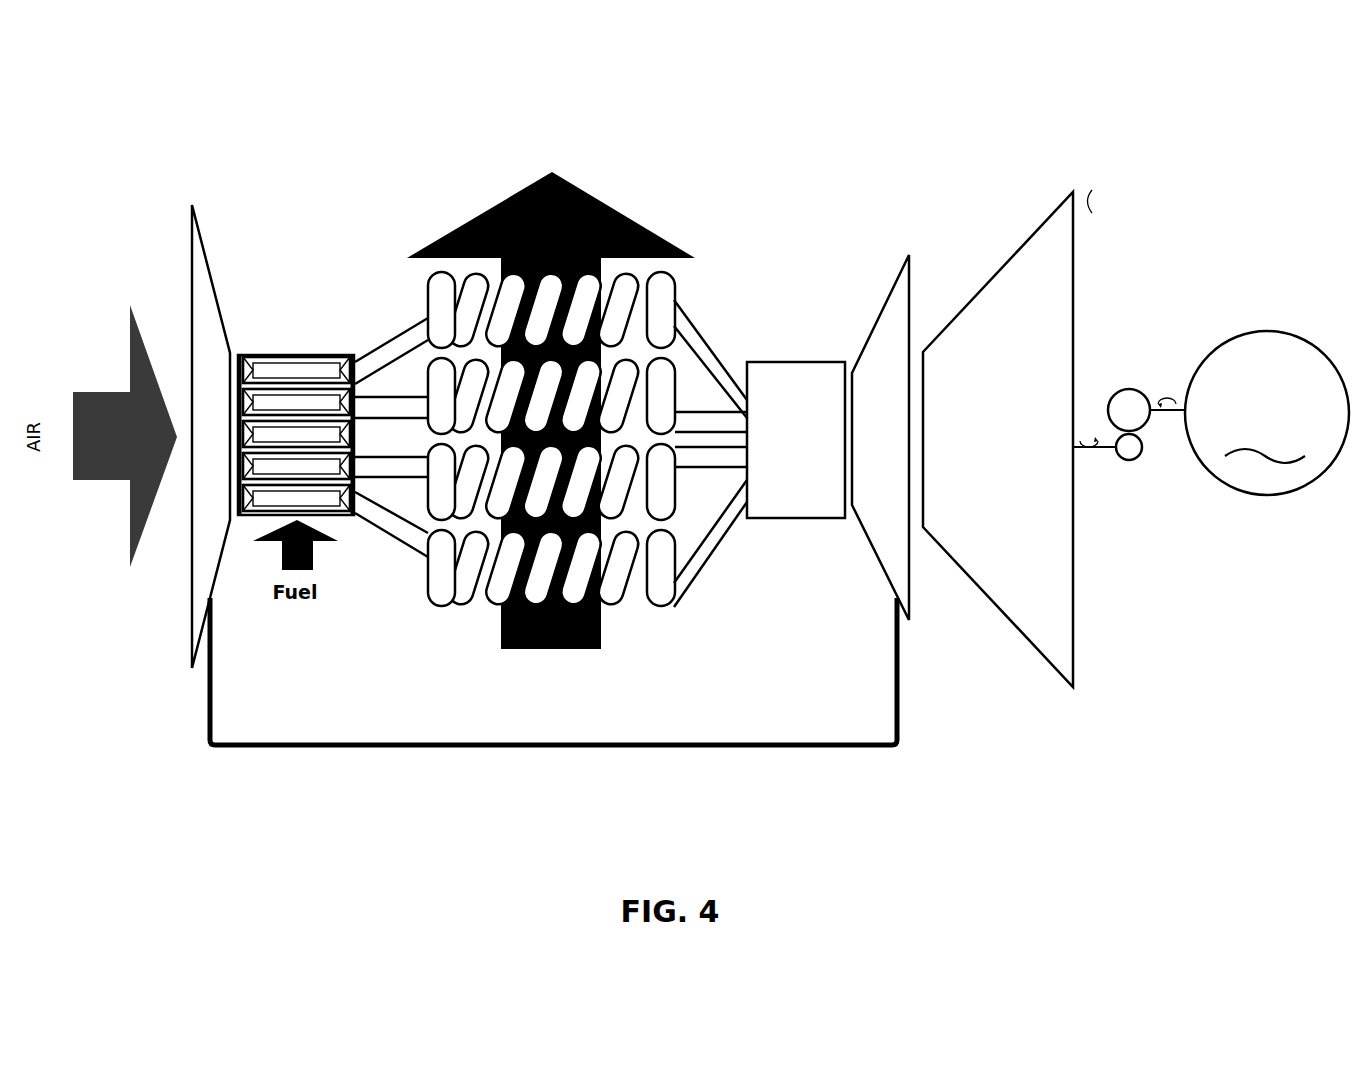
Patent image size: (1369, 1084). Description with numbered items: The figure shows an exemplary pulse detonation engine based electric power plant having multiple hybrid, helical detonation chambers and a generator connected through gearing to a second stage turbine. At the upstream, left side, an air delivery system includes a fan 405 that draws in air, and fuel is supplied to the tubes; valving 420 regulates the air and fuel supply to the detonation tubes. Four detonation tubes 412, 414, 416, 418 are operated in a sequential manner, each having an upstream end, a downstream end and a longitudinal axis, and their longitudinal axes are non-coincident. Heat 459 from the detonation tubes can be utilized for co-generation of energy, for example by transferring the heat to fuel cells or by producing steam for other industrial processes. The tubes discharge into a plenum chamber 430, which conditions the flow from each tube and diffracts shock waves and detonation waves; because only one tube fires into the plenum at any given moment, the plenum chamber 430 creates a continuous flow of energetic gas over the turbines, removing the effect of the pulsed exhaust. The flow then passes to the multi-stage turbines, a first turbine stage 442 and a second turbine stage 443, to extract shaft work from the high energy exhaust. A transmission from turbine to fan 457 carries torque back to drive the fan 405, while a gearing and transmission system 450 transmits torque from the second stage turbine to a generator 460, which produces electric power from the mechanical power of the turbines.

The fan 405 is at (180, 588).
The detonation tube 412 is at (420, 290).
The detonation tube 414 is at (551, 396).
The detonation tube 416 is at (551, 482).
The detonation tube 418 is at (551, 568).
The valving 420 is at (295, 346).
The plenum chamber 430 is at (798, 530).
The turbine 442 is at (920, 586).
The turbine stage 2 443 is at (1085, 631).
The gearing and transmission 450 is at (1133, 376).
The transmission from turbine to fan 457 is at (388, 759).
The heat from the detonation tubes 459 is at (553, 152).
The generator 460 is at (1278, 496).